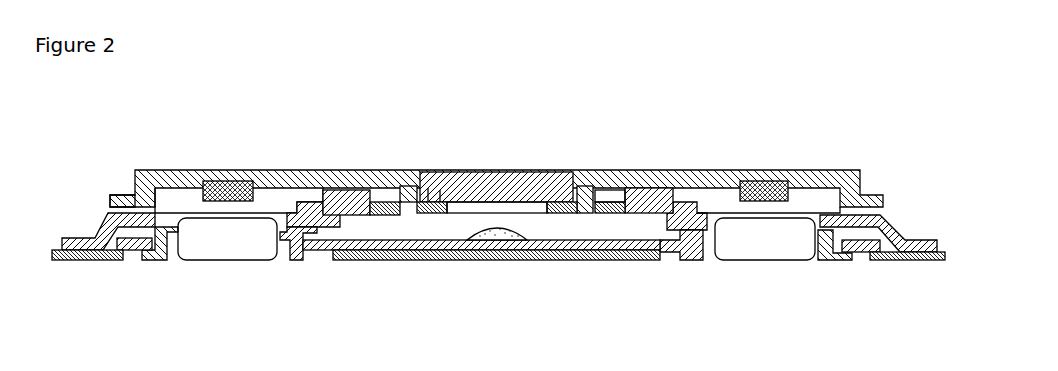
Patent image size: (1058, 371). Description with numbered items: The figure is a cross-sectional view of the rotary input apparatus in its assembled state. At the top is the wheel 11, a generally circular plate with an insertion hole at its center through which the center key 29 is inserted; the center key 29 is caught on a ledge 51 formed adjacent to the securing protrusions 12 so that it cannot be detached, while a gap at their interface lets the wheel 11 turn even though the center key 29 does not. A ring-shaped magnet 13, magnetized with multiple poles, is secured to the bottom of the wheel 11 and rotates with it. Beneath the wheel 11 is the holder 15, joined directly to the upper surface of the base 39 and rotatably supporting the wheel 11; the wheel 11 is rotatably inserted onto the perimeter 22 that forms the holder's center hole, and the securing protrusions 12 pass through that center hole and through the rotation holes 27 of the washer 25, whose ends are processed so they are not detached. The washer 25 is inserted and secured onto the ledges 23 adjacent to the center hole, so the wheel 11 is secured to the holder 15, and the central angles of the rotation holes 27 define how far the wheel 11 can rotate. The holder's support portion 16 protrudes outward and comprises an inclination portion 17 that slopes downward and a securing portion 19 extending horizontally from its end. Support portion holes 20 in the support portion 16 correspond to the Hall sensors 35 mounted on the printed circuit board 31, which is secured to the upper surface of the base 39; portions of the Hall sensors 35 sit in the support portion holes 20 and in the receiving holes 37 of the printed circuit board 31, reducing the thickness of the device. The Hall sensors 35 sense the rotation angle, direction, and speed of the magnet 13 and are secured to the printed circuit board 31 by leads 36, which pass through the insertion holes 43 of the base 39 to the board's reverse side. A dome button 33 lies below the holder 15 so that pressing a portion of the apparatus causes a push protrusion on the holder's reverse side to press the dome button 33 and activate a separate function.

The wheel 11 is at (155, 170).
The securing protrusions 12 is at (412, 215).
The magnet 13 is at (238, 181).
The holder 15 is at (338, 190).
The support portion 16 is at (880, 215).
The inclination portion 17 is at (107, 216).
The securing portion 19 is at (70, 238).
The support portion hole 20 is at (197, 200).
The perimeter 22 is at (313, 202).
The ledges 23 is at (377, 215).
The washer 25 is at (446, 195).
The rotation holes 27 is at (395, 188).
The center key 29 is at (497, 190).
The printed circuit board 31 is at (633, 262).
The dome button 33 is at (497, 243).
The Hall sensors 35 is at (230, 245).
The leads 36 is at (307, 263).
The receiving holes 37 is at (157, 263).
The base 39 is at (93, 263).
The insertion holes 43 is at (133, 263).
The ledge 51 is at (428, 188).